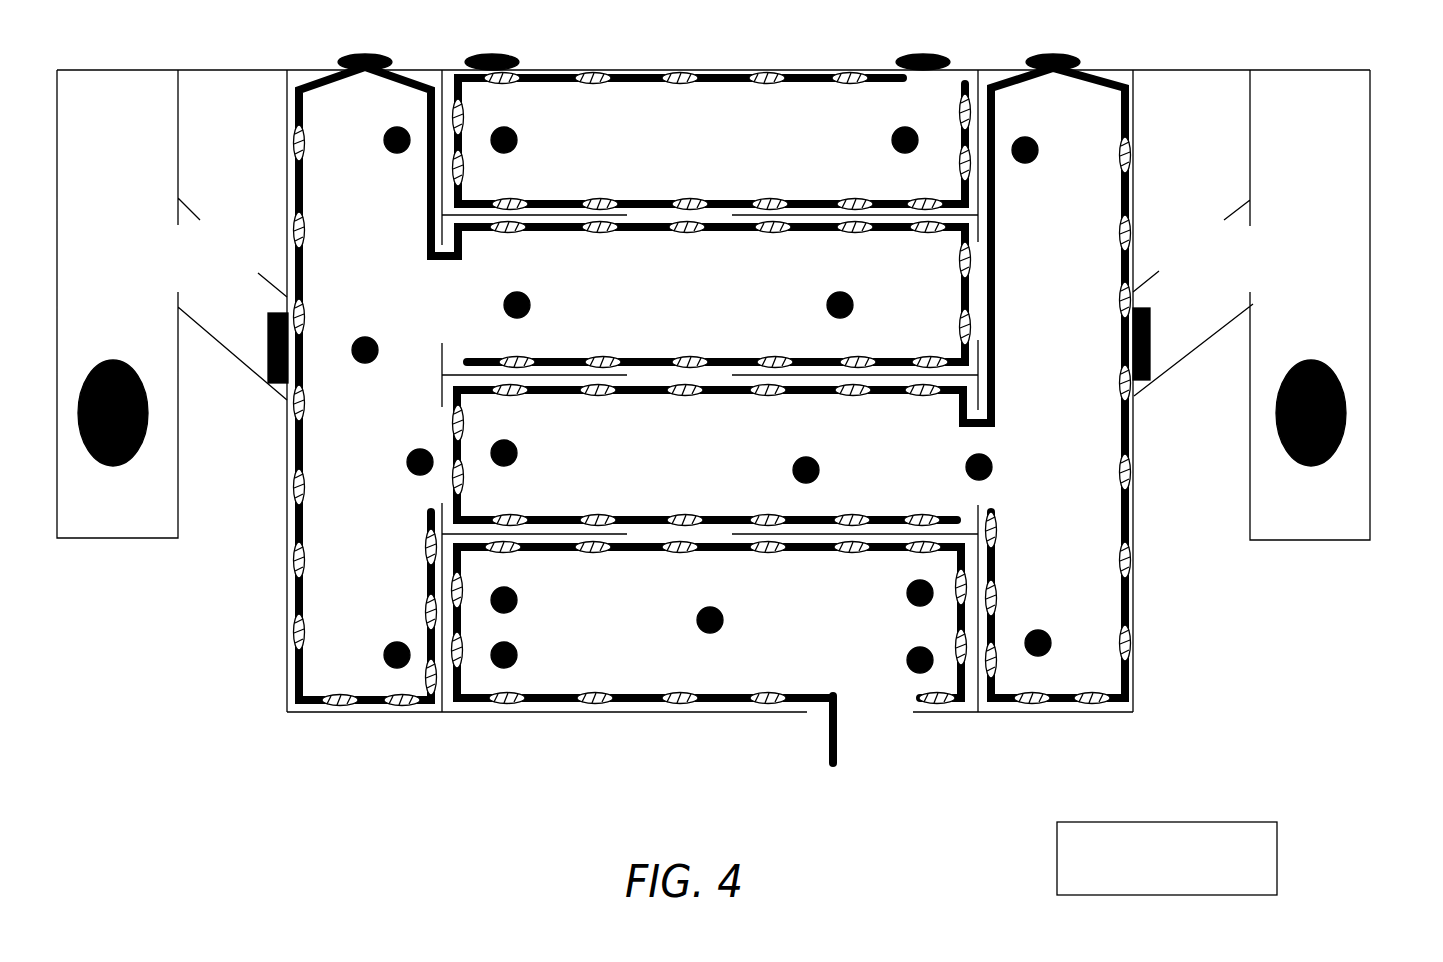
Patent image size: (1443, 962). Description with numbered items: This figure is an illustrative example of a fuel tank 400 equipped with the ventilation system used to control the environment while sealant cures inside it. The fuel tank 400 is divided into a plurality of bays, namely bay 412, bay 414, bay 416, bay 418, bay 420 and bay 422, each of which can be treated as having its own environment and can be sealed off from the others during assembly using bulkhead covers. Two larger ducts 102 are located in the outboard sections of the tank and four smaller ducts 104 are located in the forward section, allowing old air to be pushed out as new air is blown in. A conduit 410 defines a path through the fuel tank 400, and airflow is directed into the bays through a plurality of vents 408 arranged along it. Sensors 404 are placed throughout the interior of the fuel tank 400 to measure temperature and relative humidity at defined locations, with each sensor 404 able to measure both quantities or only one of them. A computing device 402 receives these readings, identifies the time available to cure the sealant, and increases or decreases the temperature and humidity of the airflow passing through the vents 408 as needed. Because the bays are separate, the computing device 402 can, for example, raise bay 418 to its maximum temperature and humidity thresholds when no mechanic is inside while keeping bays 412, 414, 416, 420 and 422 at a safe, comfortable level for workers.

The duct 102 is at (150, 420).
The duct 104 is at (365, 56).
The fuel tank 400 is at (217, 705).
The computing device 402 is at (1232, 822).
The sensor 404 is at (386, 134).
The vent 408 is at (308, 317).
The conduit 410 is at (840, 752).
The bay 412 is at (648, 645).
The bay 414 is at (648, 477).
The bay 416 is at (648, 318).
The bay 418 is at (646, 161).
The bay 420 is at (395, 212).
The bay 422 is at (1081, 218).